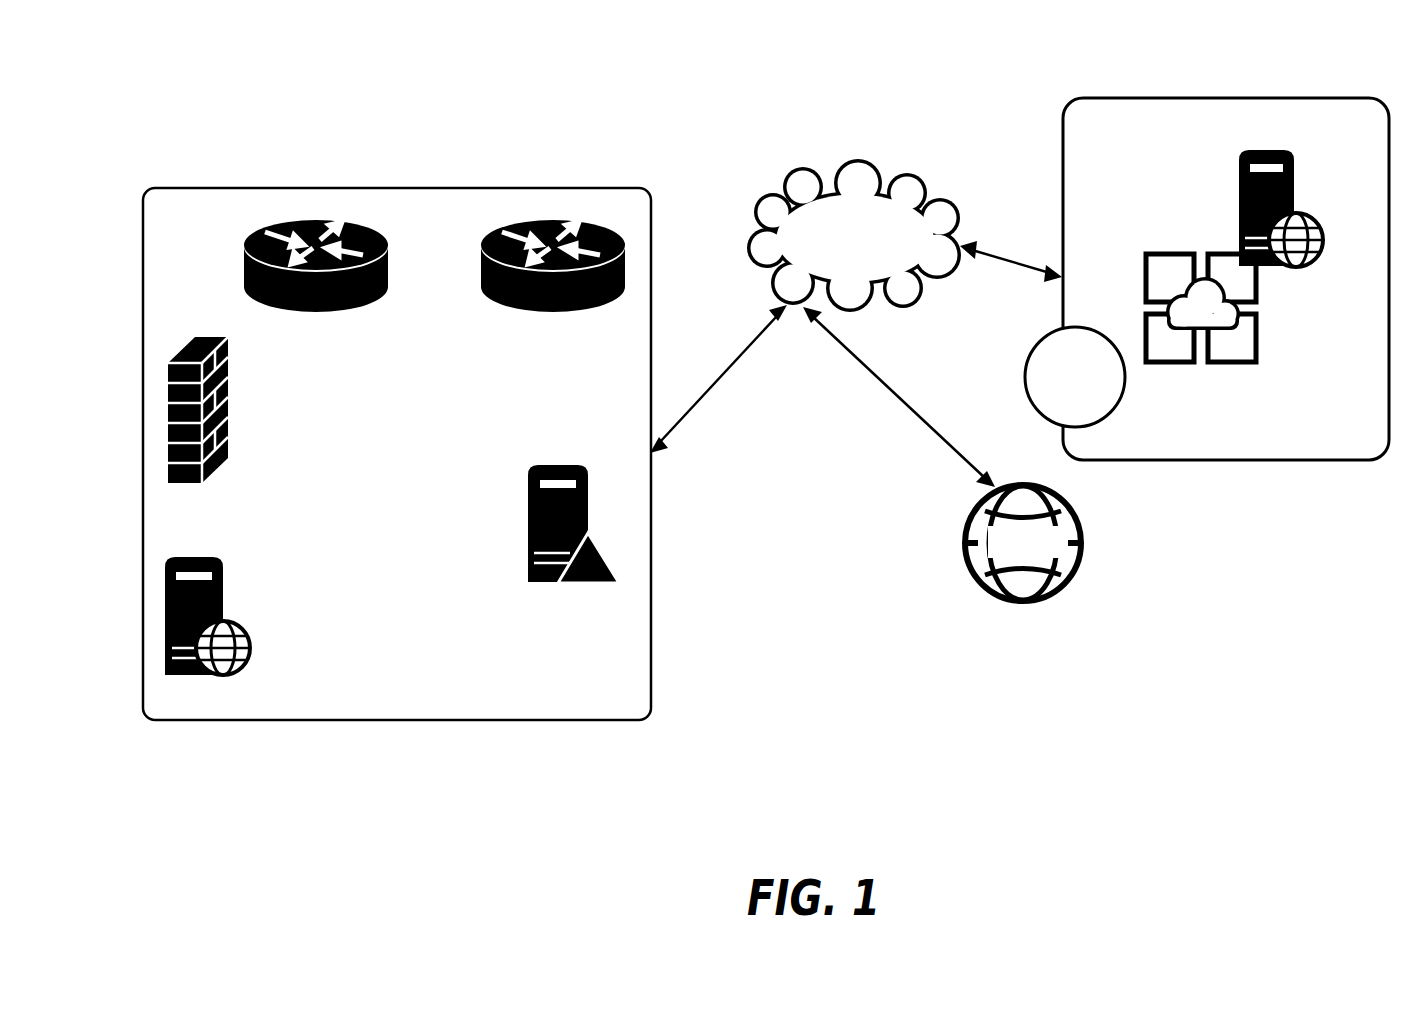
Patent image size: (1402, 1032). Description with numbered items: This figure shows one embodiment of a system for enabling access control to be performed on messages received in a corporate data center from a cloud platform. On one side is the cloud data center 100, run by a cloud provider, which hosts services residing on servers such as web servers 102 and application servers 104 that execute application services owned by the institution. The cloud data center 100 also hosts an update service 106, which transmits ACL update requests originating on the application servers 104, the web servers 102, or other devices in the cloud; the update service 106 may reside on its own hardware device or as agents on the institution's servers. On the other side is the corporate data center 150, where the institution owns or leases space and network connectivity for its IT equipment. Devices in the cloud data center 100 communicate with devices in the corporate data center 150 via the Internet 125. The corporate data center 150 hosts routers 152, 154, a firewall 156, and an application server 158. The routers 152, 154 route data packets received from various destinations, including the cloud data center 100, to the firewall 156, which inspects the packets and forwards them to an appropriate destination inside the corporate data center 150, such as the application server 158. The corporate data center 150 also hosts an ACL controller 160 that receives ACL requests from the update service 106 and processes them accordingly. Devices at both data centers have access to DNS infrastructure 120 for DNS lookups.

The cloud data center 100 is at (1260, 77).
The web servers 102 is at (1239, 147).
The application servers 104 is at (1178, 236).
The update service 106 is at (1027, 348).
The DNS infrastructure 120 is at (1085, 563).
The Internet 125 is at (862, 160).
The corporate data center 150 is at (407, 177).
The router 152 is at (388, 312).
The router 154 is at (555, 317).
The firewall 156 is at (247, 403).
The application server 158 is at (240, 585).
The ACL controller 160 is at (620, 517).